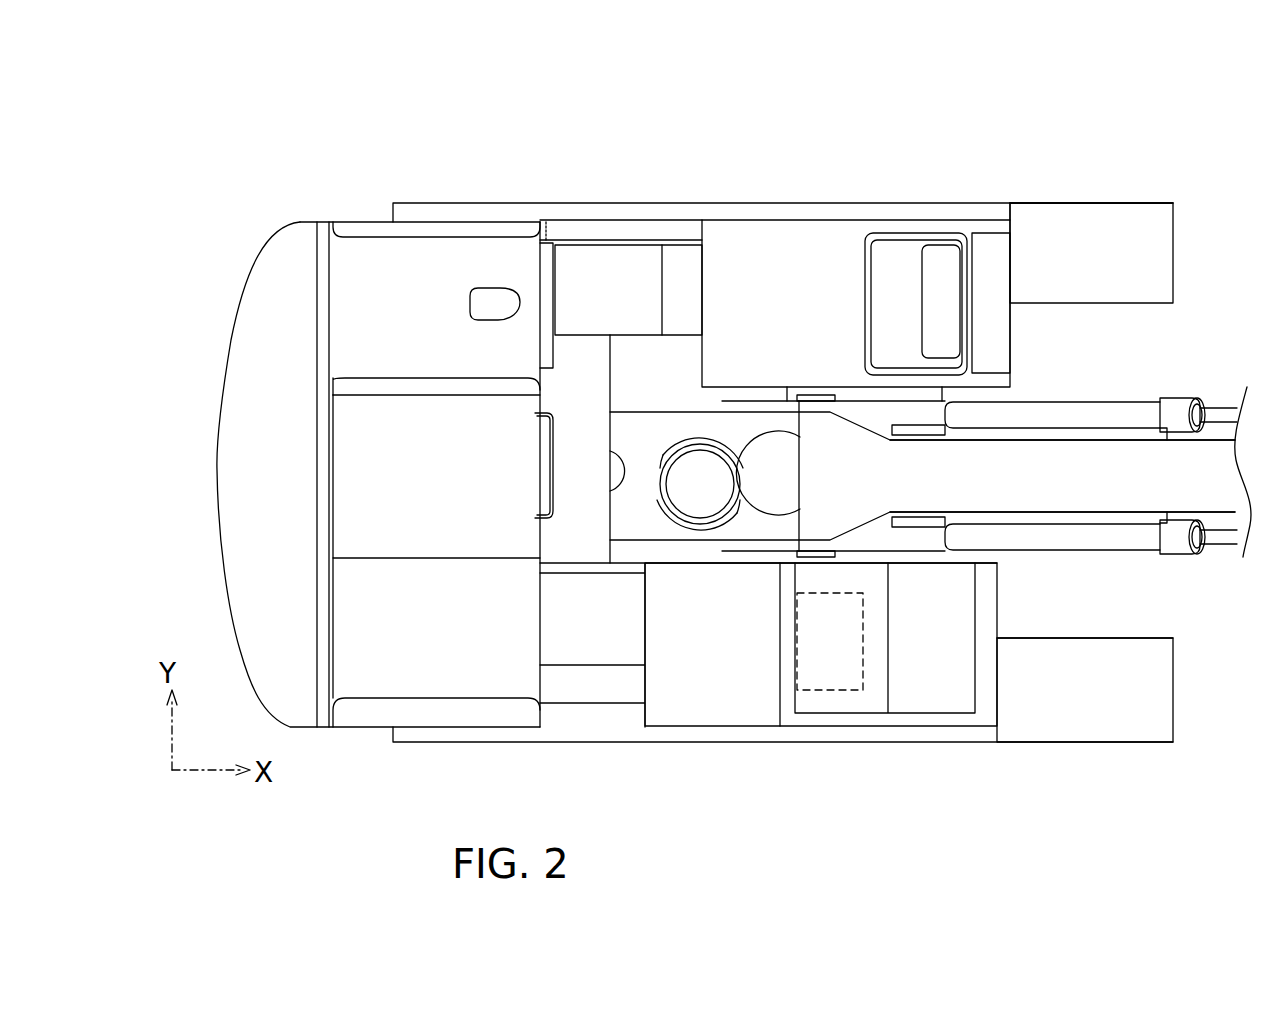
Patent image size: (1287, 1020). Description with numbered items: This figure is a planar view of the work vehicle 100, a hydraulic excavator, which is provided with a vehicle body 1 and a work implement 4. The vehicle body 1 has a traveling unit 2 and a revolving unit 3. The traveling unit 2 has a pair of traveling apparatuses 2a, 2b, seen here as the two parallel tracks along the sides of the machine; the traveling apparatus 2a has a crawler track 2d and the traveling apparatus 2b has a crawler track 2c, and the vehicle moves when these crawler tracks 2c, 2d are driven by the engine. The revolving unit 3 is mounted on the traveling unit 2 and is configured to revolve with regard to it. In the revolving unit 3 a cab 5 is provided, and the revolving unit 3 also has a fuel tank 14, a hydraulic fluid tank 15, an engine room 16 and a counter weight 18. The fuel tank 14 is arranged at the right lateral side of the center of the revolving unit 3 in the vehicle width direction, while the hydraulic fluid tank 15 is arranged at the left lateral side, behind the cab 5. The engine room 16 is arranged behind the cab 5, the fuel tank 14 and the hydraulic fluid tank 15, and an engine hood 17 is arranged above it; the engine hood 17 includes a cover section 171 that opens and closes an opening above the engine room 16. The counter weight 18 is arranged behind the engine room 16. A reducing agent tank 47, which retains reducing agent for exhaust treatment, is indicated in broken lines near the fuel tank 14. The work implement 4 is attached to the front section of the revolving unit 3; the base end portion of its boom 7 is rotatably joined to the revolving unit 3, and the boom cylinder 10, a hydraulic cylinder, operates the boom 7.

The work vehicle 100 is at (970, 157).
The vehicle body 1 is at (735, 176).
The traveling unit 2 is at (1122, 420).
The traveling apparatus 2a is at (1152, 697).
The traveling apparatus 2b is at (1155, 242).
The crawler track 2c is at (1050, 230).
The crawler track 2d is at (1065, 658).
The revolving unit 3 is at (600, 216).
The work implement 4 is at (1200, 392).
The cab 5 is at (893, 258).
The boom 7 is at (1121, 470).
The boom cylinder 10 is at (1070, 410).
The fuel tank 14 is at (731, 712).
The hydraulic fluid tank 15 is at (631, 270).
The engine room 16 is at (343, 210).
The engine hood 17 is at (378, 630).
The counter weight 18 is at (280, 247).
The reducing agent tank 47 is at (838, 692).
The cover section 171 is at (390, 478).